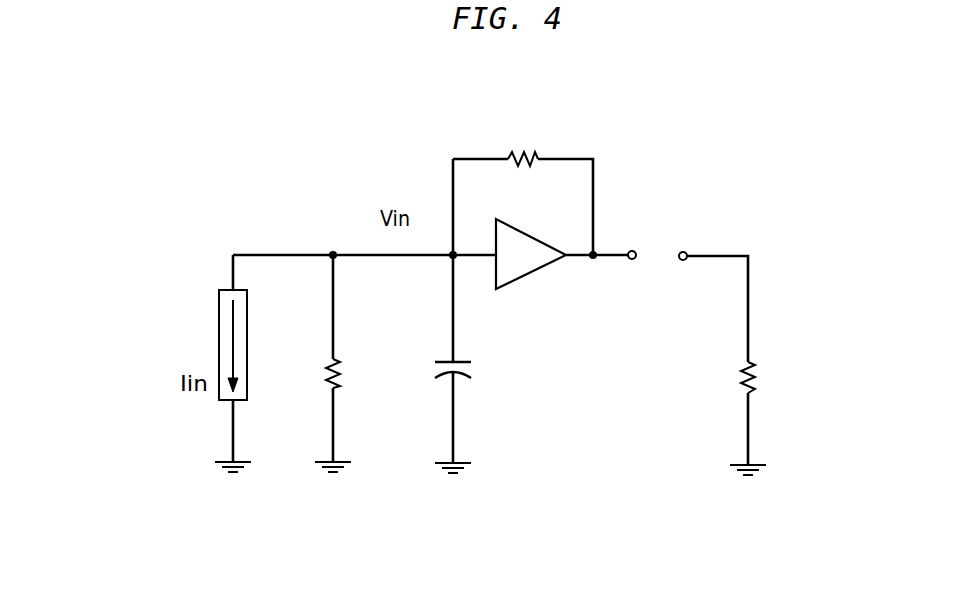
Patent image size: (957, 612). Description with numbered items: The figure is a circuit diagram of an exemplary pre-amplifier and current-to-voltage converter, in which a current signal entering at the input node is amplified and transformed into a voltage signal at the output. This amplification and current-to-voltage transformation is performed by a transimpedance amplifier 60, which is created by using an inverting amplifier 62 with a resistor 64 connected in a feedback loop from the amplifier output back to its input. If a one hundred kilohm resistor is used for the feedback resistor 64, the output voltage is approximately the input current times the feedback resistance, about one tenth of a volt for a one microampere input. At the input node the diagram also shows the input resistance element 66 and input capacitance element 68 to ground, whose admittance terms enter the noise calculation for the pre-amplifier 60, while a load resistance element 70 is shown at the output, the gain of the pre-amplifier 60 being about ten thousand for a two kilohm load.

The transimpedance amplifier 60 is at (604, 512).
The inverting amplifier 62 is at (558, 262).
The feedback resistor 64 is at (536, 154).
The input resistor Rin 66 is at (341, 363).
The input capacitor Cin 68 is at (468, 360).
The load resistor RL 70 is at (756, 366).